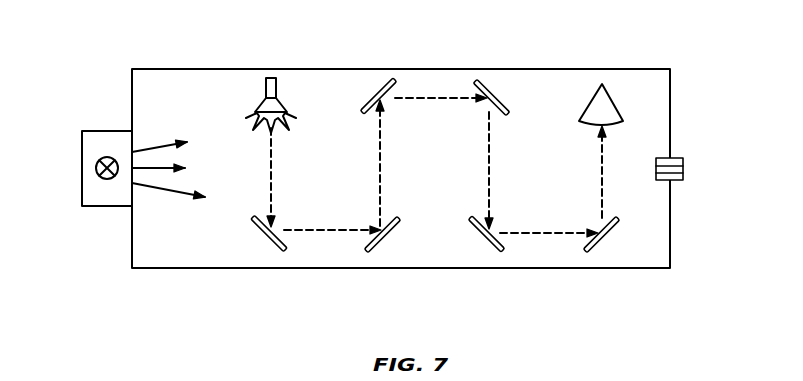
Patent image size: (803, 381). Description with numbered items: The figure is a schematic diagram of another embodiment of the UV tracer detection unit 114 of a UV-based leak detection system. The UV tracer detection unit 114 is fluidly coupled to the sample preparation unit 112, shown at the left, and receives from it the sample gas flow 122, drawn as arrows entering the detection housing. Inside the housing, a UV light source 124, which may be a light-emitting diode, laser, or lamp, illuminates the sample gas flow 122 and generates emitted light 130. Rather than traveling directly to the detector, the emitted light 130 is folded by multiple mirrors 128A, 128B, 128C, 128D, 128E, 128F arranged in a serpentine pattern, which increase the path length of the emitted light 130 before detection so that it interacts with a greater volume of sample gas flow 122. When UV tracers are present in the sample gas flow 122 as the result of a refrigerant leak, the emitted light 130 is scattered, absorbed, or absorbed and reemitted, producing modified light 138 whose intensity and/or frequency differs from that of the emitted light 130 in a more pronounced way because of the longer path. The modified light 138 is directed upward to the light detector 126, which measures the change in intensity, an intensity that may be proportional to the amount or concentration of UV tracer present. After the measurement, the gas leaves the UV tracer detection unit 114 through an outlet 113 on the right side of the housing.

The UV tracer detection unit 114 is at (532, 48).
The sample preparation unit 112 is at (82, 163).
The sample gas flow 122 is at (162, 145).
The UV light source 124 is at (265, 86).
The emitted light 130 is at (270, 171).
The mirror 128A is at (263, 239).
The mirror 128B is at (374, 96).
The mirror 128C is at (386, 238).
The mirror 128D is at (497, 95).
The mirror 128E is at (482, 238).
The mirror 128F is at (608, 239).
The modified light 138 is at (602, 164).
The light detector 126 is at (609, 98).
The outlet 113 is at (684, 162).